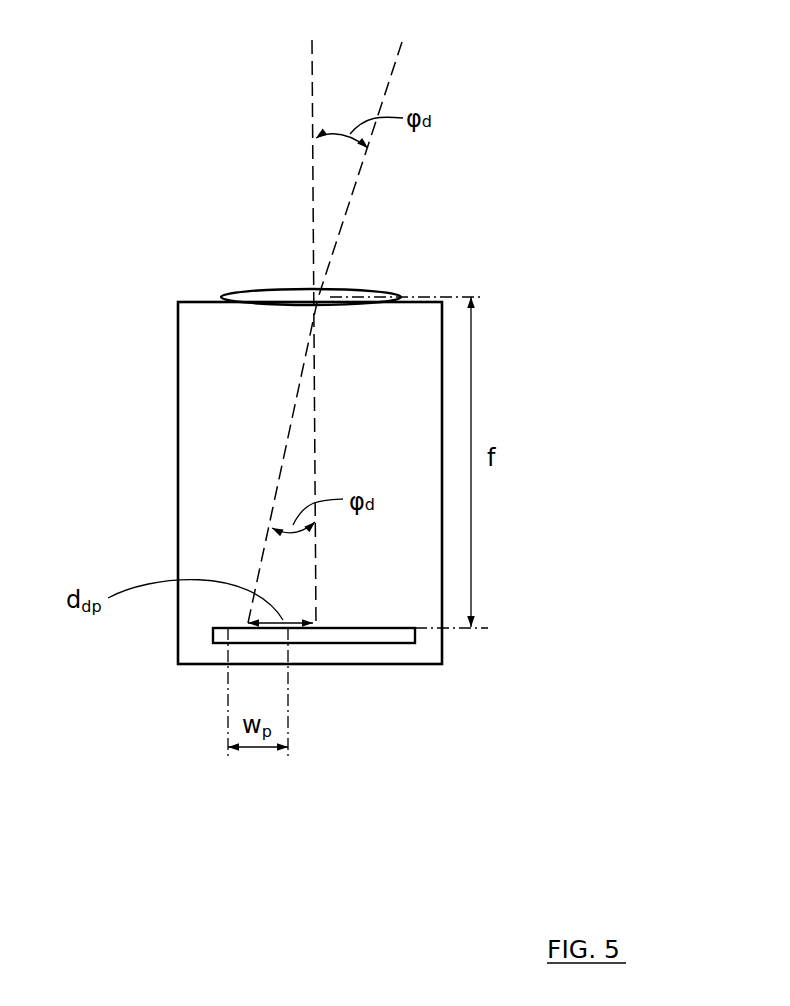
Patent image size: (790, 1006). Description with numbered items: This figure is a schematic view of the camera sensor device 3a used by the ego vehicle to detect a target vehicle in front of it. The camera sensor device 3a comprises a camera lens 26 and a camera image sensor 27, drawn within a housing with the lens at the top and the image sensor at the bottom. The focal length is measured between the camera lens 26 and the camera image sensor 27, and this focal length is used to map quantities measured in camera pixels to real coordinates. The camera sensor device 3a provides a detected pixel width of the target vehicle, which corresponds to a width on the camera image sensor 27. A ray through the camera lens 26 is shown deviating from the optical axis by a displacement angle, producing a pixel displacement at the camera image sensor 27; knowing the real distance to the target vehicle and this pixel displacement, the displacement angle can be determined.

The camera sensor device 3a is at (582, 333).
The camera lens 26 is at (260, 292).
The camera image sensor 27 is at (375, 635).